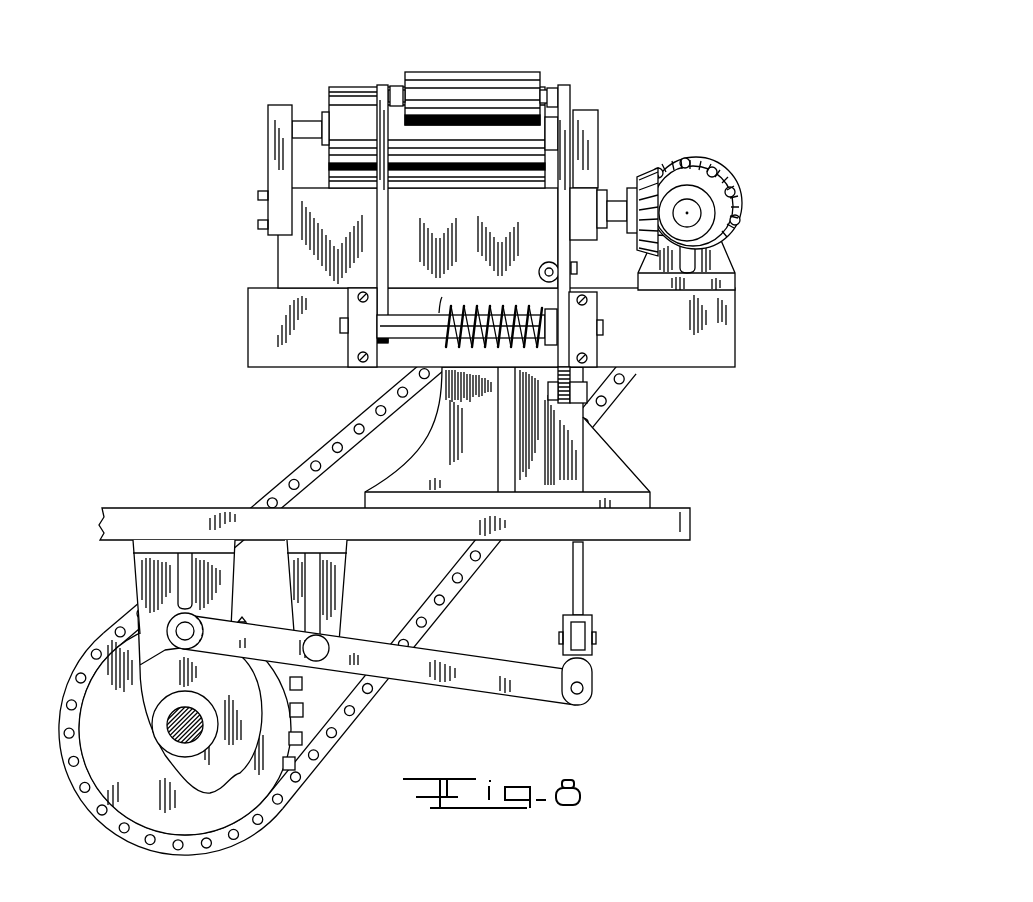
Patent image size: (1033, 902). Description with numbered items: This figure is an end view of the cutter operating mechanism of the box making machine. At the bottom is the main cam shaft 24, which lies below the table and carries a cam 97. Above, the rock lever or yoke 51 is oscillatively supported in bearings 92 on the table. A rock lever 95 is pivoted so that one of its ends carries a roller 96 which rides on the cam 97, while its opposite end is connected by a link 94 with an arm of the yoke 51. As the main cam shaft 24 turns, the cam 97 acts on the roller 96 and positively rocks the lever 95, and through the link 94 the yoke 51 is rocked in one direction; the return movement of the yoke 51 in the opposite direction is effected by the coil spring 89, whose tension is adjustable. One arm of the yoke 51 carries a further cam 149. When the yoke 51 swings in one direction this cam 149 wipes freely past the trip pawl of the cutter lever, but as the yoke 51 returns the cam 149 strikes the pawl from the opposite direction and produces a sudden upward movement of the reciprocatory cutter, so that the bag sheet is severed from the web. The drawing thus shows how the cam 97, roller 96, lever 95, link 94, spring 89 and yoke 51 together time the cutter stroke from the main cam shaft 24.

The main cam shaft 24 is at (185, 725).
The rock lever or yoke 51 is at (383, 207).
The coil spring 89 is at (443, 345).
The bearings 92 is at (362, 328).
The link 94 is at (583, 575).
The rock lever 95 is at (515, 685).
The roller 96 is at (170, 620).
The cam 97 is at (235, 770).
The cam 149 is at (585, 222).